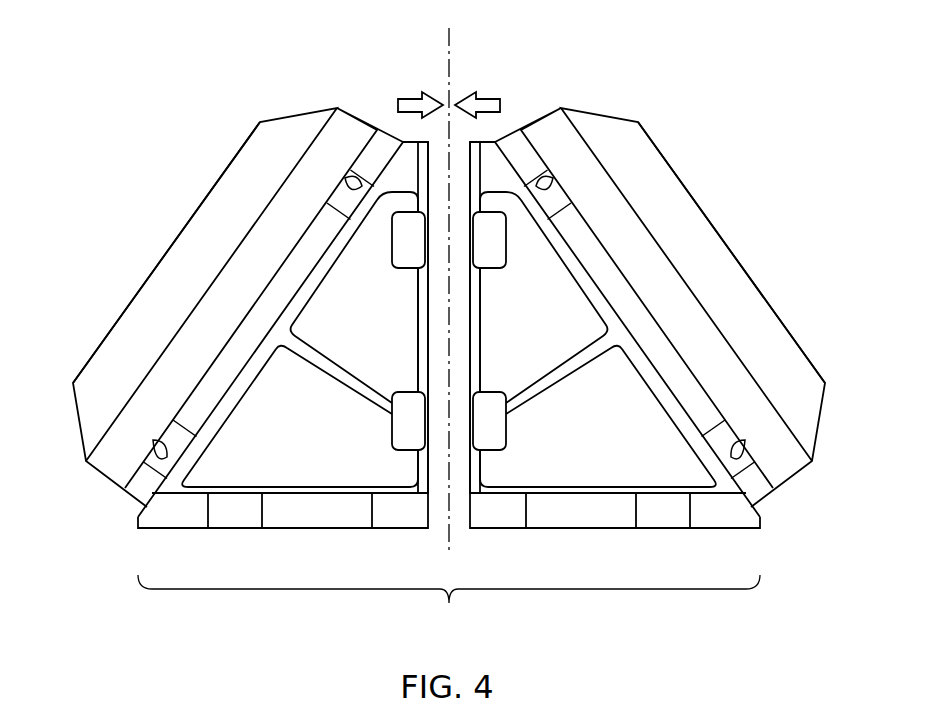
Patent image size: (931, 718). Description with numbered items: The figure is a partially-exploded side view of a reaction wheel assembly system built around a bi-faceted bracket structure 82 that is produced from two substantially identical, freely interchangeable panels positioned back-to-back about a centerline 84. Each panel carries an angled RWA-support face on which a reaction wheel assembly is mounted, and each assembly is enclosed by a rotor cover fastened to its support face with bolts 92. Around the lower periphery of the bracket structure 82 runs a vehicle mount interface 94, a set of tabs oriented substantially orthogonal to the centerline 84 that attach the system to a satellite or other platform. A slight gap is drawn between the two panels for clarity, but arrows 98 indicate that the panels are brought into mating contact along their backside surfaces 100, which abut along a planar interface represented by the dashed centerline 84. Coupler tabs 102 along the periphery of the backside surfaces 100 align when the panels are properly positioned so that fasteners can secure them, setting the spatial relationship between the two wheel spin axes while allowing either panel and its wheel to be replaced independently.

The bi-faceted bracket structure 82 is at (449, 603).
The centerline 84 is at (450, 30).
The bolts 92 is at (356, 183).
The vehicle mount interface 94 is at (240, 529).
The arrows 98 is at (410, 97).
The backside surfaces 100 is at (428, 372).
The coupler tabs 102 is at (407, 270).